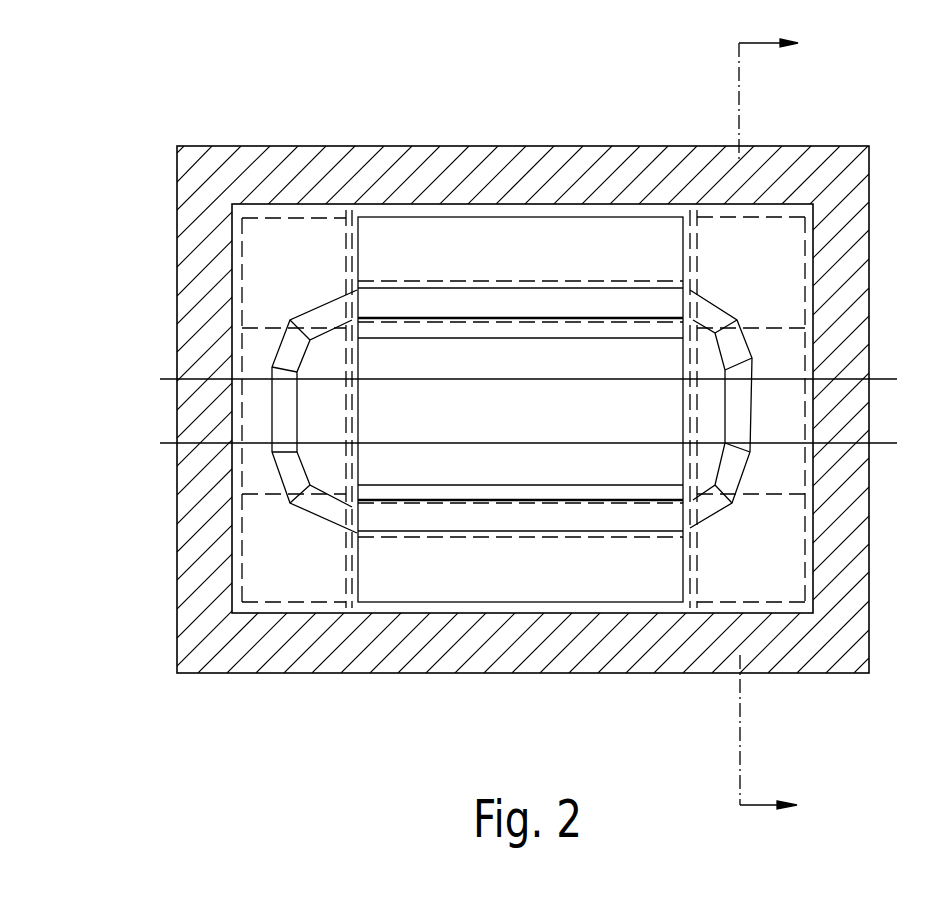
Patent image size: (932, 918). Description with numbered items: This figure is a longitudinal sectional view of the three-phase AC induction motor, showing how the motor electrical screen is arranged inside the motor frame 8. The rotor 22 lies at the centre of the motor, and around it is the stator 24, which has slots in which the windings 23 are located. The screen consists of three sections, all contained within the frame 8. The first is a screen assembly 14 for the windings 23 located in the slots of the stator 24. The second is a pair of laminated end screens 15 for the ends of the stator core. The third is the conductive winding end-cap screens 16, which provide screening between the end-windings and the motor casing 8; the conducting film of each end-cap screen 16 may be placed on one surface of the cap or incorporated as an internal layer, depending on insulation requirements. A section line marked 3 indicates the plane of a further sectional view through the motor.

The section line 3- 3 is at (778, 425).
The motor frame 8 is at (852, 238).
The screen assembly 14 is at (642, 532).
The laminated end screens 15 is at (355, 258).
The conductive winding end-cap screens 16 is at (303, 243).
The rotor 22 is at (640, 358).
The windings 23 is at (708, 507).
The stator 24 is at (535, 258).